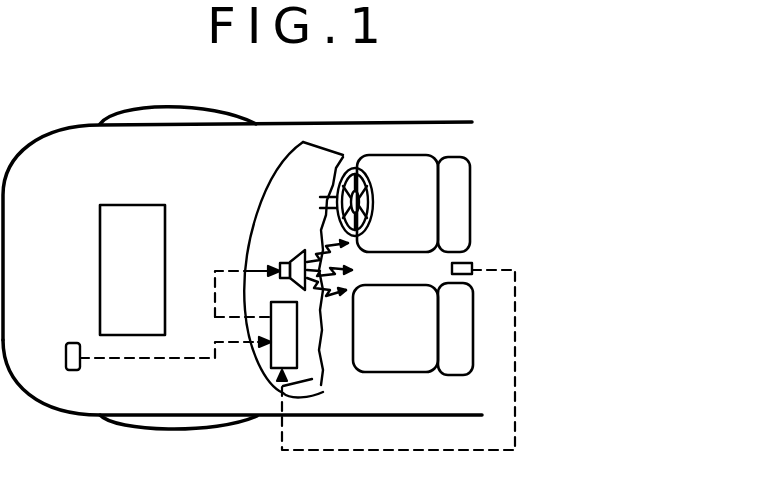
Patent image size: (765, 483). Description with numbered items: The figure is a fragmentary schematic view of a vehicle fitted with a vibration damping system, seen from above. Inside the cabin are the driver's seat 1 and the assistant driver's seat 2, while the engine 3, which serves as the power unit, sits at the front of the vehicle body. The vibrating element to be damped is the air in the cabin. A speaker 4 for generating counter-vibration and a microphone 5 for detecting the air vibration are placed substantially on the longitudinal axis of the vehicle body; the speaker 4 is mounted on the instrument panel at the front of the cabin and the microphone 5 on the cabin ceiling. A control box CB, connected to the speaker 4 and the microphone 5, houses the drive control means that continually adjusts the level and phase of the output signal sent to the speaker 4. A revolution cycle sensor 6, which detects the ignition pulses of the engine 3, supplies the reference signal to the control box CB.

The driver's seat 1 is at (410, 165).
The assistant driver's seat 2 is at (410, 360).
The engine 3 is at (110, 237).
The speaker 4 is at (298, 258).
The microphone 5 is at (472, 264).
The revolution cycle sensor 6 is at (82, 365).
The control box CB is at (280, 358).